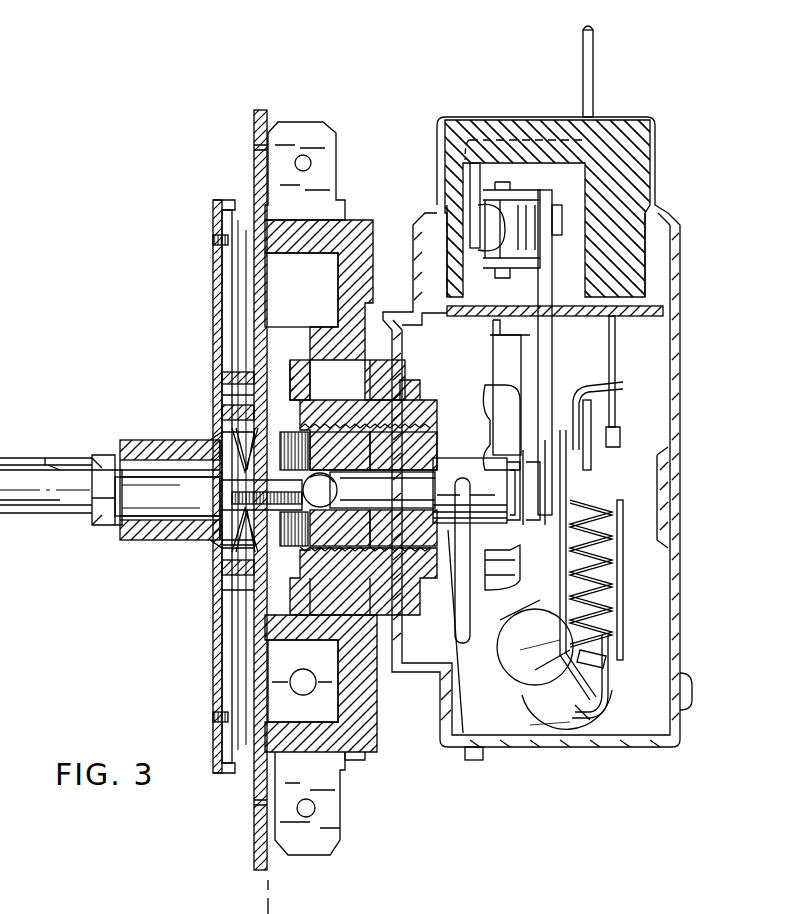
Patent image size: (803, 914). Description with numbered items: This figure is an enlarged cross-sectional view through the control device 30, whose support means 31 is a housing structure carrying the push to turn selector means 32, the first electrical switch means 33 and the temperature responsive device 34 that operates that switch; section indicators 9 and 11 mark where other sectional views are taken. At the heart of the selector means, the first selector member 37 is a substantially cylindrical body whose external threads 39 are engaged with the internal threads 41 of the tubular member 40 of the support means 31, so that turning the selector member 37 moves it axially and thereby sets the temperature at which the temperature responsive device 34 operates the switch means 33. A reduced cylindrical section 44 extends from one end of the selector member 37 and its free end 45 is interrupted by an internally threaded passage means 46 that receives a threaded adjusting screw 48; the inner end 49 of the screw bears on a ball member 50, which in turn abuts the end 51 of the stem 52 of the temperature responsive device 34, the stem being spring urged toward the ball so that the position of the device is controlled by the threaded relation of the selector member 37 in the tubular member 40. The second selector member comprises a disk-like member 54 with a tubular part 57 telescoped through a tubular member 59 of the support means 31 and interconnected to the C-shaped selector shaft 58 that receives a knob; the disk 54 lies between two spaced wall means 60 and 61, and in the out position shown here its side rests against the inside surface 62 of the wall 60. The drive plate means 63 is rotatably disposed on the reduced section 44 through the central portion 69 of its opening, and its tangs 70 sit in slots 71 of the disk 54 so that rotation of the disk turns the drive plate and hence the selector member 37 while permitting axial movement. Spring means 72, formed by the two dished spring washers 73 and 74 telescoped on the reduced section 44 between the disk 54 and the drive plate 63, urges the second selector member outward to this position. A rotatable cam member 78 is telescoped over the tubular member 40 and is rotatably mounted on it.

The section line 9- 9 is at (264, 108).
The section line 11- 11 is at (548, 18).
The control device 30 is at (668, 86).
The support means 31 is at (527, 750).
The push to turn selector means 32 is at (196, 556).
The first electrical switch means 33 is at (580, 258).
The temperature responsive device 34 is at (535, 382).
The first selector member 37 is at (425, 452).
The threads 39 is at (363, 587).
The tubular member 40 is at (415, 430).
The internal threads 41 is at (406, 598).
The reduced cylindrical section 44 is at (303, 668).
The free end 45 is at (200, 542).
The passage means 46 is at (228, 492).
The threaded adjusting screw 48 is at (303, 402).
The inner end 49 is at (316, 502).
The ball member 50 is at (340, 451).
The end 51 is at (368, 447).
The stem 52 is at (406, 500).
The disk-like member 54 is at (215, 412).
The tubular part 57 is at (140, 535).
The C-shaped selector shaft 58 is at (72, 455).
The tubular member 59 is at (148, 440).
The wall means 60 is at (215, 340).
The wall means 61 is at (272, 308).
The inside surface 62 is at (225, 380).
The drive plate means 63 is at (282, 400).
The central portion 69 is at (200, 512).
The tangs 70 is at (235, 330).
The slots 71 is at (215, 395).
The spring means 72 is at (235, 555).
The dished spring washer member 73 is at (220, 442).
The dished spring washer member 74 is at (264, 529).
The rotatable cam member 78 is at (240, 640).